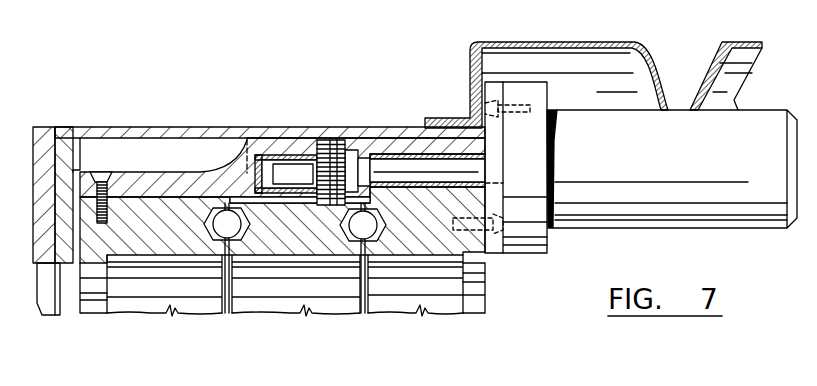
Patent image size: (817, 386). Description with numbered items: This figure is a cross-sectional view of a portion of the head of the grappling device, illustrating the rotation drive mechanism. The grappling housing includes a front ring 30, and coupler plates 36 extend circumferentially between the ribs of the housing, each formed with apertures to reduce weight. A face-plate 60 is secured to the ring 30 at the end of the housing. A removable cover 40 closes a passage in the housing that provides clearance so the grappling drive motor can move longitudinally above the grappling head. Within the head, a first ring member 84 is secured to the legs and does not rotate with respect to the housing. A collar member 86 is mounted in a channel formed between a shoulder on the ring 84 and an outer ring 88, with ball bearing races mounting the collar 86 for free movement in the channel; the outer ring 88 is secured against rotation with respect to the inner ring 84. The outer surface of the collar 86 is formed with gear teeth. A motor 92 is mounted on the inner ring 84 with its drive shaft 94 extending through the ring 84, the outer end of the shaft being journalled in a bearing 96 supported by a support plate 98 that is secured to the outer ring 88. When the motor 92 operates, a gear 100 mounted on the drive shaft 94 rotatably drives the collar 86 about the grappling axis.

The front ring 30 is at (72, 153).
The coupler plate 36 is at (105, 127).
The removable cover 40 is at (553, 42).
The face-plate 60 is at (52, 303).
The first ring member 84 is at (478, 297).
The collar member 86 is at (327, 297).
The outer ring 88 is at (192, 298).
The motor 92 is at (621, 208).
The drive shaft 94 is at (410, 168).
The bearing 96 is at (280, 157).
The support plate 98 is at (183, 183).
The gear 100 is at (332, 147).